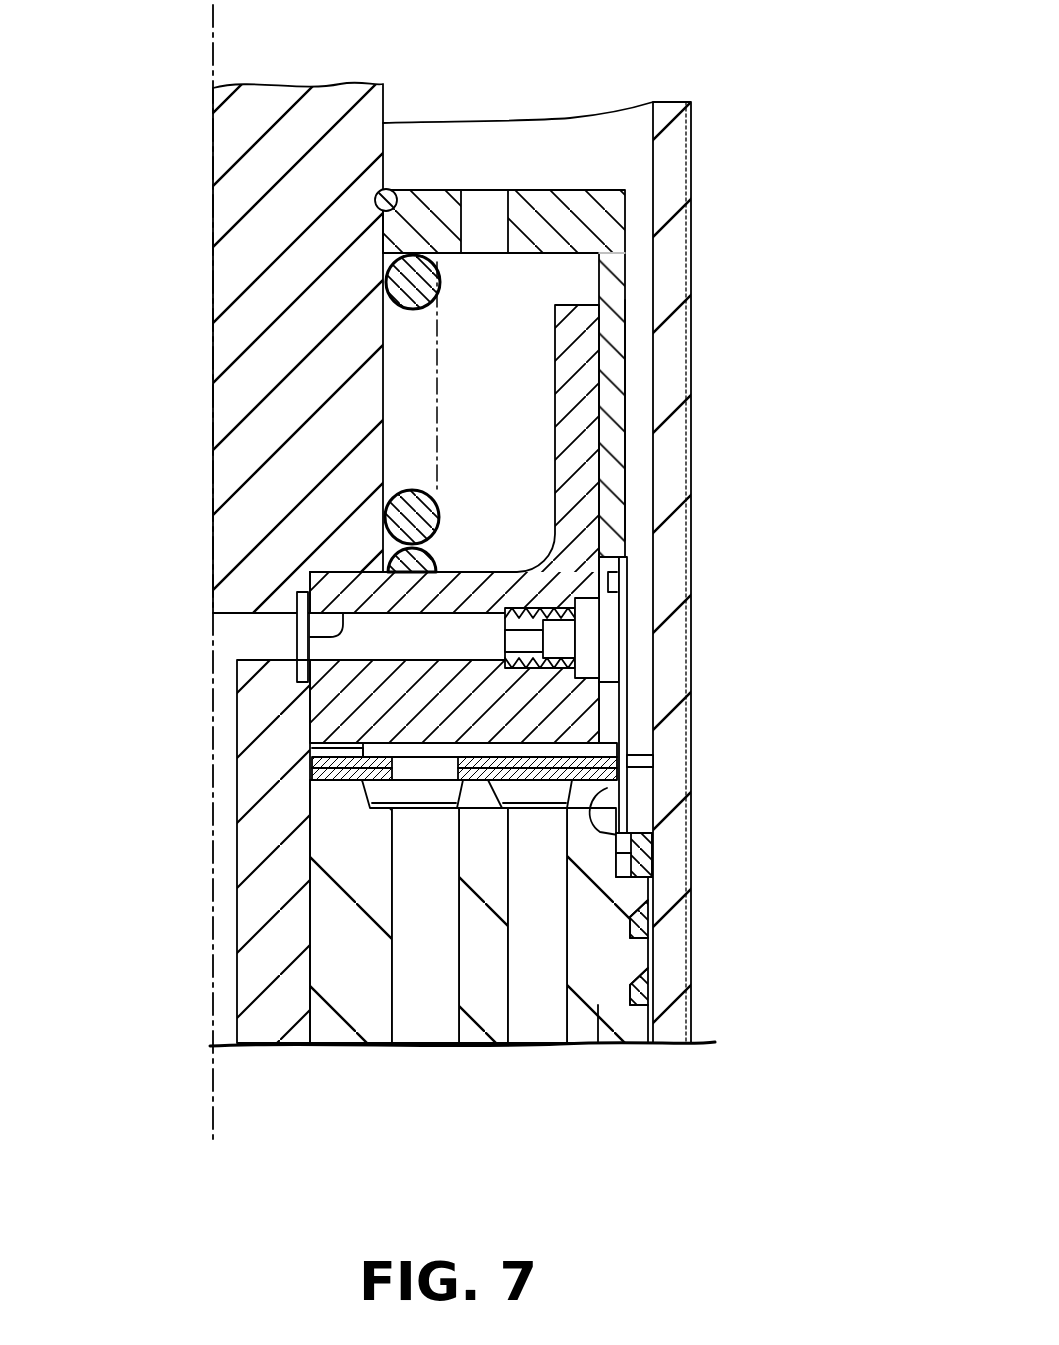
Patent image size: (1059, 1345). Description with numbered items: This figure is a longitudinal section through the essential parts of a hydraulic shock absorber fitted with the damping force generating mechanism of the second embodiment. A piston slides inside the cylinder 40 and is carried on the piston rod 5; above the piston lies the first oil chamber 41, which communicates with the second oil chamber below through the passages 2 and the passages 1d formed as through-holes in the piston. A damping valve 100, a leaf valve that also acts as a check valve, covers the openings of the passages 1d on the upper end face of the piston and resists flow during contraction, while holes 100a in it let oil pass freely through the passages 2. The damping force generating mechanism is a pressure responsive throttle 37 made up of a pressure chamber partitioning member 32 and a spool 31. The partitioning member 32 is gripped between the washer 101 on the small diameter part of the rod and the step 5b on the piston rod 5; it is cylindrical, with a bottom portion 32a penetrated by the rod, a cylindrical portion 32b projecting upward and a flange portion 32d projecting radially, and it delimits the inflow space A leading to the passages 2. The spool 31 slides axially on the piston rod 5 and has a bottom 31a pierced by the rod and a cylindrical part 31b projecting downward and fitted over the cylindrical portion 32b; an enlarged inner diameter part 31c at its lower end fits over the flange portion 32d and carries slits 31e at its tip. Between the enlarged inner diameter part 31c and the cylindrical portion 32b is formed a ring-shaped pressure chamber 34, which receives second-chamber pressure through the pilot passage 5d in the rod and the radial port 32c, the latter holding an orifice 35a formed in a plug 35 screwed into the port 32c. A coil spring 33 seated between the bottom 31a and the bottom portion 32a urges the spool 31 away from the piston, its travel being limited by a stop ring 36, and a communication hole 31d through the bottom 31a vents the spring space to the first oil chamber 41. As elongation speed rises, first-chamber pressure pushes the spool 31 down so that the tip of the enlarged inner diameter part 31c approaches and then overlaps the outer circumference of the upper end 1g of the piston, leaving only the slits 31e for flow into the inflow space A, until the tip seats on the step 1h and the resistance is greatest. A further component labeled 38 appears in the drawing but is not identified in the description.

The passages 1d is at (550, 1023).
The upper end of the piston 1g is at (650, 866).
The step 1h is at (660, 863).
The passages 2 is at (430, 1012).
The piston rod 5 is at (205, 386).
The step 5b is at (296, 590).
The pilot passage 5d is at (296, 690).
The spool 31 is at (551, 178).
The bottom 31a is at (568, 188).
The cylindrical part 31b is at (624, 428).
The enlarged inner diameter part 31c is at (627, 569).
The communication hole 31d is at (482, 210).
The slits 31e is at (630, 770).
The pressure chamber partitioning member 32 is at (296, 708).
The bottom portion 32a is at (308, 583).
The cylindrical portion 32b is at (582, 394).
The port 32c is at (310, 637).
The flange portion 32d is at (602, 690).
The coil spring 33 is at (385, 290).
The pressure chamber 34 is at (601, 603).
The plug 35 is at (580, 654).
The orifice 35a is at (612, 552).
The stop ring 36 is at (388, 192).
The pressure responsive throttle 37 is at (640, 770).
The fixing bolt 38 is at (652, 836).
The cylinder 40 is at (691, 232).
The first oil chamber 41 is at (625, 160).
The damping valve 100 is at (296, 752).
The holes 100a is at (408, 786).
The washer 101 is at (296, 769).
The inflow space A is at (615, 780).